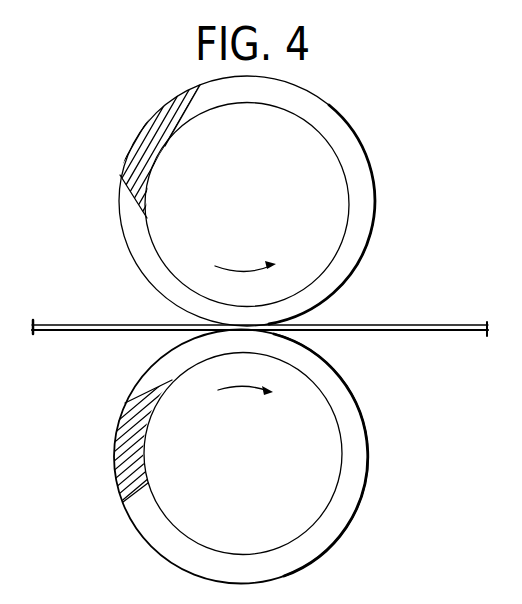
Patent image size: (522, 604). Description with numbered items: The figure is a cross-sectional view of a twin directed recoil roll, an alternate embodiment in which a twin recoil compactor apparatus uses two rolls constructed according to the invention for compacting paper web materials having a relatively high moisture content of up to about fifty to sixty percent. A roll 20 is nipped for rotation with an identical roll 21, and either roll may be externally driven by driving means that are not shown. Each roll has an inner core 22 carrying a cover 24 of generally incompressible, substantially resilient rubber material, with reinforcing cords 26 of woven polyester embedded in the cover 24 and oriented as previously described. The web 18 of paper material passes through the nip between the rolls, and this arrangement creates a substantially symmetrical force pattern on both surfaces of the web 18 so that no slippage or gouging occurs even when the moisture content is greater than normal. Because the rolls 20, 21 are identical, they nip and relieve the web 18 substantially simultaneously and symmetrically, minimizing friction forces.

The web 18 is at (418, 326).
The roll 20 is at (386, 167).
The roll 21 is at (386, 459).
The inner core 22 is at (333, 212).
The cover 24 is at (342, 122).
The reinforcing cords 26 is at (141, 137).